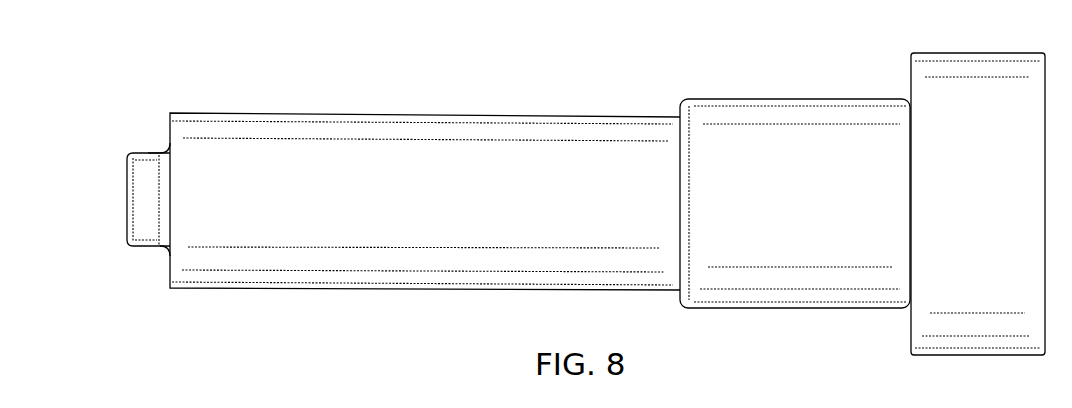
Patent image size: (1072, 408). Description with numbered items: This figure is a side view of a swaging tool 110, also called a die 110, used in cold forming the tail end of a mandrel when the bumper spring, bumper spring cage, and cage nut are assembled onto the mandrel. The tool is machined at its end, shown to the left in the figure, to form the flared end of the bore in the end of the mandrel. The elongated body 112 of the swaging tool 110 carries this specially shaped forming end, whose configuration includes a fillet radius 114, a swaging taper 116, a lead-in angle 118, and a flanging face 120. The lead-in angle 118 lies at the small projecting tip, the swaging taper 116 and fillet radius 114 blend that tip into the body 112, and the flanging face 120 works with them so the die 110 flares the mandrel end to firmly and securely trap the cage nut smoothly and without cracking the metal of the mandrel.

The swaging tool 110 is at (288, 58).
The body 112 is at (445, 216).
The fillet radius 114 is at (166, 147).
The swaging taper 116 is at (148, 153).
The lead-in angle 118 is at (127, 202).
The flanging face 120 is at (170, 272).